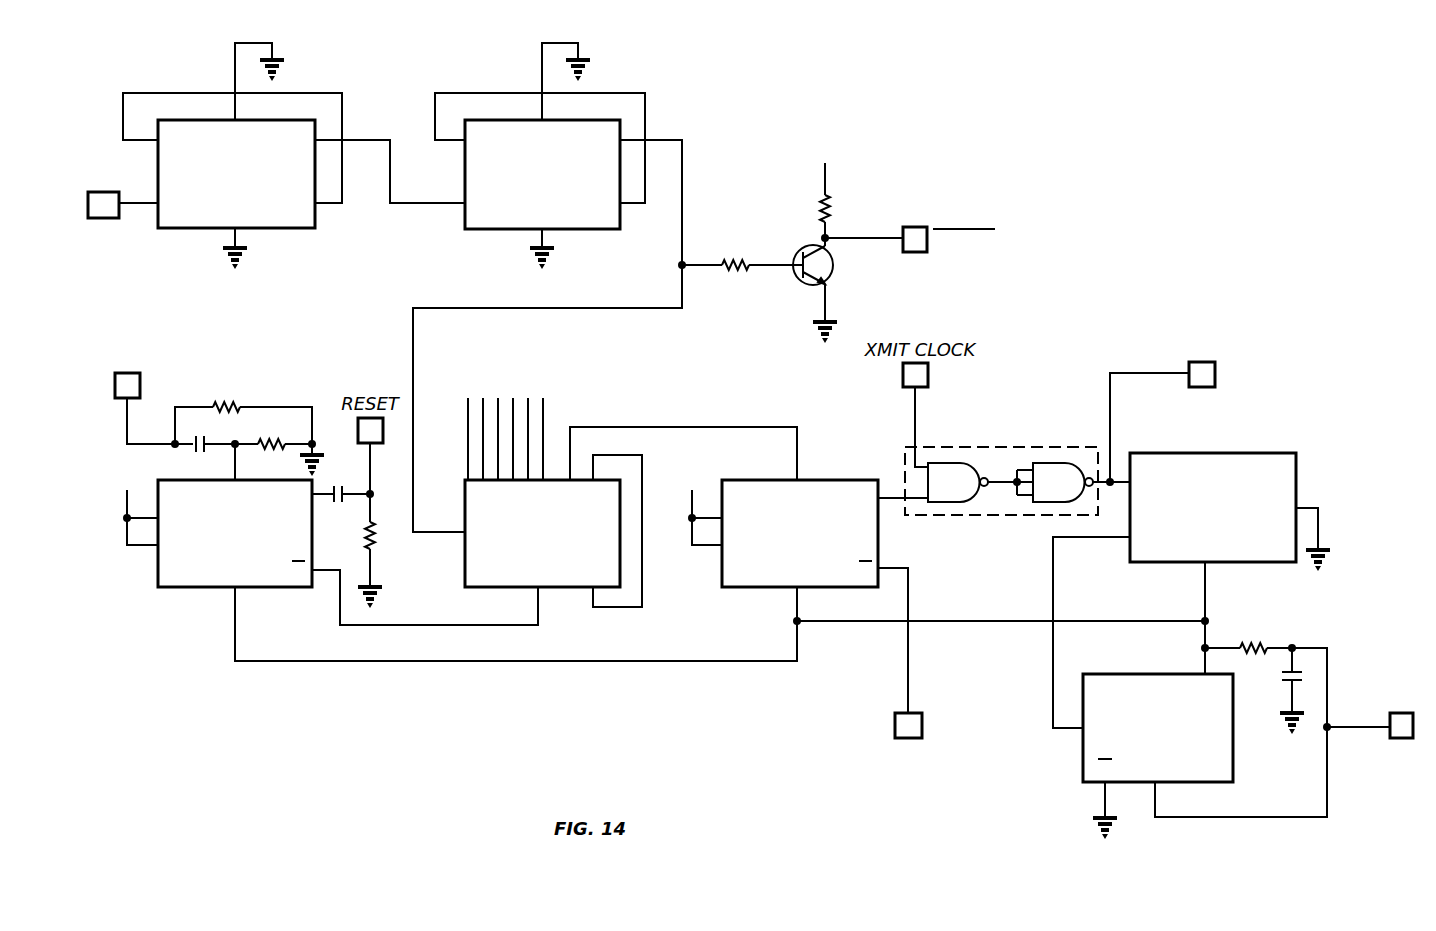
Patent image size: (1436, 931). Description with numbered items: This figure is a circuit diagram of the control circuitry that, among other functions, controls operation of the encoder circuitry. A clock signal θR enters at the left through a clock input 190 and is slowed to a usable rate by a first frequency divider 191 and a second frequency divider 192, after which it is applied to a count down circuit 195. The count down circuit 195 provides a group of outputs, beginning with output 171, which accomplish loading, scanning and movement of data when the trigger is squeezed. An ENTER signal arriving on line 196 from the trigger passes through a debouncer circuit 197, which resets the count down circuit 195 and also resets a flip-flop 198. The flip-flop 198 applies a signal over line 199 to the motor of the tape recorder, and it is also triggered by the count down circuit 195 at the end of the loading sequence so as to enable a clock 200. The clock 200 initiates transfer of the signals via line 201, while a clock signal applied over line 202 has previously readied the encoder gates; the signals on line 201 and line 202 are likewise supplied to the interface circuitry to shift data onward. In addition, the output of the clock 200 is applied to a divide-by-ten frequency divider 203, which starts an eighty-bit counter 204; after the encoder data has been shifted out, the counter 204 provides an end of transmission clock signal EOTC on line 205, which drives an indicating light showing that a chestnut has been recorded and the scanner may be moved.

The output 171 is at (460, 391).
The clock input ØR 190 is at (141, 208).
The frequency divider 191 is at (287, 222).
The frequency divider 192 is at (589, 222).
The count down circuit 195 is at (468, 576).
The line 196 is at (124, 411).
The debouncer circuit 197 is at (173, 578).
The flip-flop 198 is at (823, 490).
The line 199 is at (908, 660).
The clock 200 is at (1000, 518).
The line 201 is at (1138, 375).
The line 202 is at (865, 237).
The divide-by-ten frequency divider 203 is at (1264, 557).
The eighty-bit counter 204 is at (1222, 770).
The line 205 is at (1368, 727).